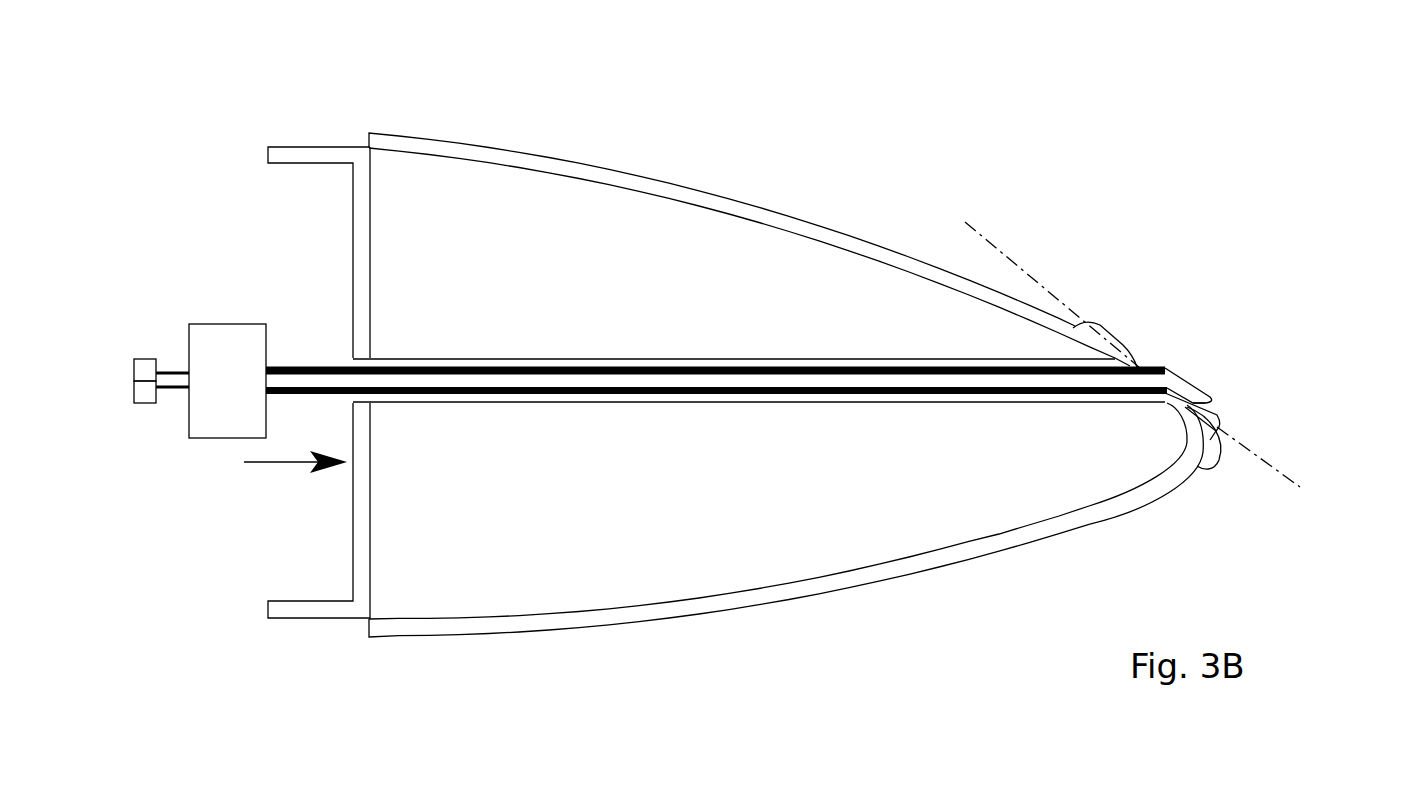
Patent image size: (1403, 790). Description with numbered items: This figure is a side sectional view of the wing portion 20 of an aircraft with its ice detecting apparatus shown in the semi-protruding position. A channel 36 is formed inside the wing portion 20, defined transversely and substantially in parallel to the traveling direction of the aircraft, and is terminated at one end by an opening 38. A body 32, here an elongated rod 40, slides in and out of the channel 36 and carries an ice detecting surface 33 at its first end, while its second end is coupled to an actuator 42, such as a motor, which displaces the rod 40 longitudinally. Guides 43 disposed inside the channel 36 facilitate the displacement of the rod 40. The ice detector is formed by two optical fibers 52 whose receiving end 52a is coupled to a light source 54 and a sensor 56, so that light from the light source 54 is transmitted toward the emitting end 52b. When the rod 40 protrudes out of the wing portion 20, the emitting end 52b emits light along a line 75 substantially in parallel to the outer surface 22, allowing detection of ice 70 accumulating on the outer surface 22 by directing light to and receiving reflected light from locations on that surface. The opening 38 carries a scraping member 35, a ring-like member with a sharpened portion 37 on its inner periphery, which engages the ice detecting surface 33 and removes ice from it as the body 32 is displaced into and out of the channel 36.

The wing portion 20 is at (767, 112).
The outer surface 22 is at (792, 216).
The body 32 is at (1187, 383).
The ice detecting surface 33 is at (1195, 402).
The scraping member 35 is at (1143, 368).
The channel 36 is at (888, 360).
The sharpened portion 37 is at (1220, 445).
The opening 38 is at (1137, 357).
The elongated rod 40 is at (1077, 372).
The actuator 42 is at (228, 332).
The guides 43 is at (838, 375).
The optical fibers 52 is at (1013, 393).
The receiving end 52a is at (218, 372).
The emitting end 52b is at (1220, 427).
The light source 54 is at (145, 366).
The sensor 56 is at (145, 402).
The ice 70 is at (1107, 338).
The line 75 is at (1007, 250).